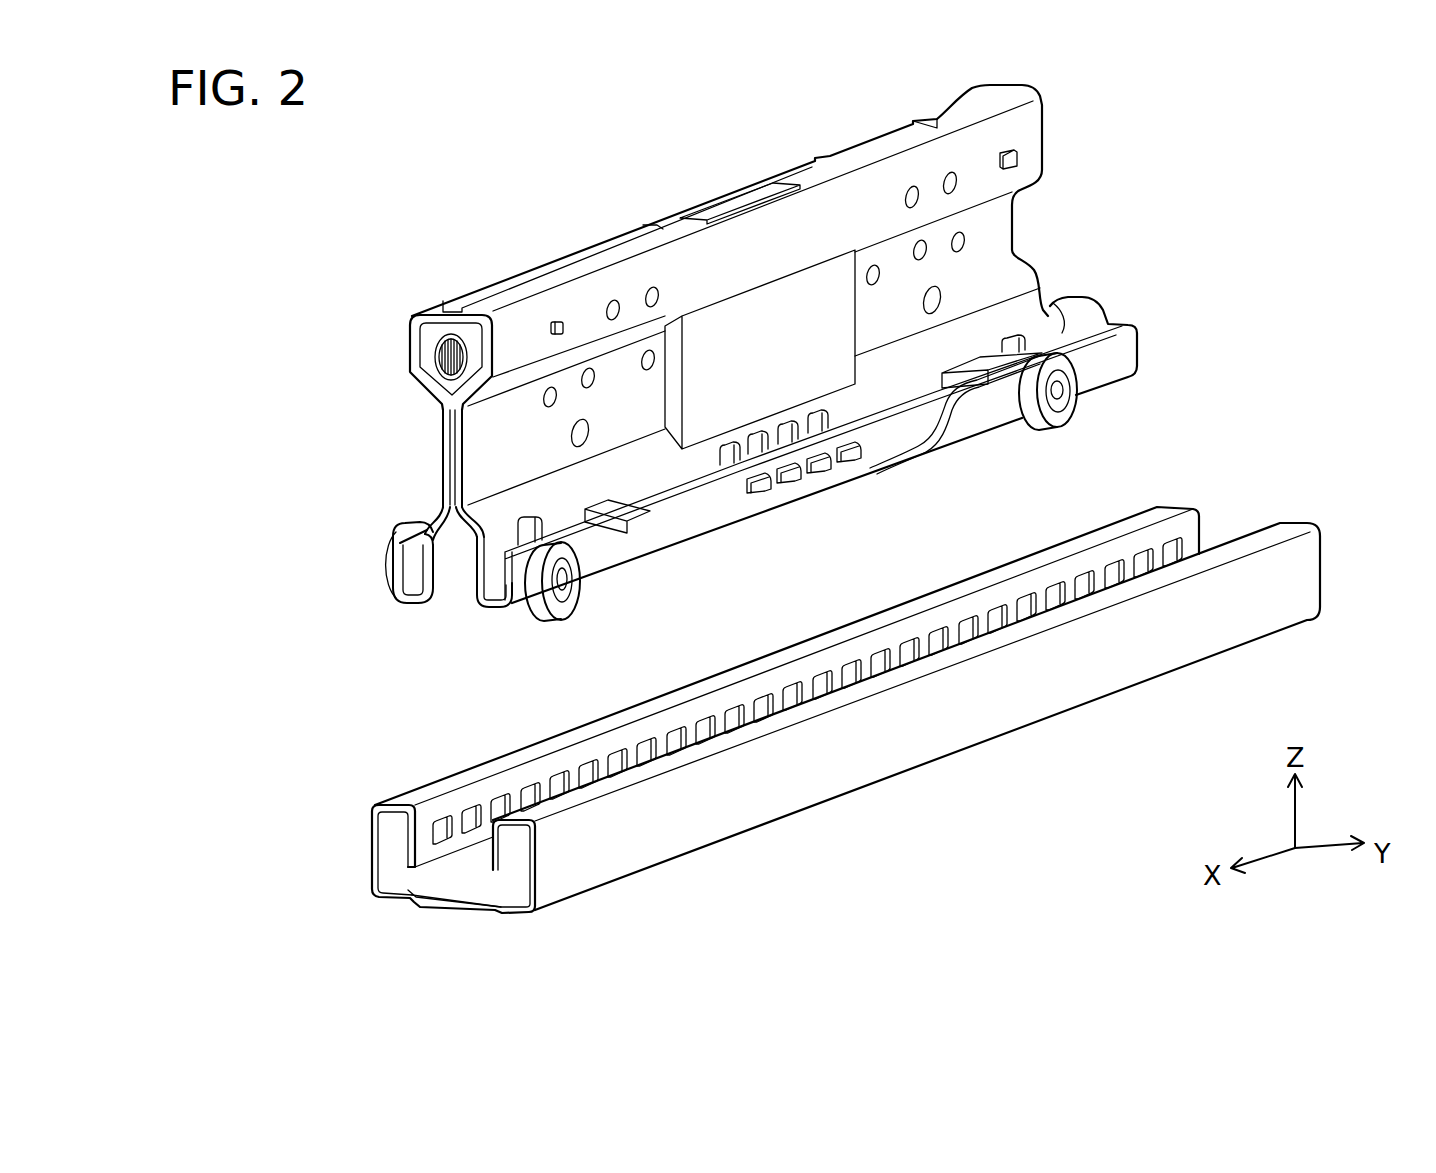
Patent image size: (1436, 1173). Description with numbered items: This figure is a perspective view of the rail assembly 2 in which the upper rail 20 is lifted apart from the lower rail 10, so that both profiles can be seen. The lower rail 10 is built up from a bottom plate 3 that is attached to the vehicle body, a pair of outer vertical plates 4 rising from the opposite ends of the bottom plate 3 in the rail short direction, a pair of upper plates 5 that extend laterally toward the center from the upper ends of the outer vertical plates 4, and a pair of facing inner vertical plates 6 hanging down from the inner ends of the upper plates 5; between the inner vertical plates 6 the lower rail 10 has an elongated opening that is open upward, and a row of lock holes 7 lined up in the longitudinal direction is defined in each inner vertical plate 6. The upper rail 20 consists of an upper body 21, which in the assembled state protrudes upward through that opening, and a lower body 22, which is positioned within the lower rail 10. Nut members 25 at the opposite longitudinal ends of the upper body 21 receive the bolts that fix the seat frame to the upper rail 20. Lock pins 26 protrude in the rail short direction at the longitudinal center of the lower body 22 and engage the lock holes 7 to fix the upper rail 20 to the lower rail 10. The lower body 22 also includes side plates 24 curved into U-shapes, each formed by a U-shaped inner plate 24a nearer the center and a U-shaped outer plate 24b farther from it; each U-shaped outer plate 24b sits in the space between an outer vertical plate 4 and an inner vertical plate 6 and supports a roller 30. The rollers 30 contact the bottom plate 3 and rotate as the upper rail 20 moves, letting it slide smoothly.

The slide device 2 is at (441, 183).
The bottom plate 3 is at (430, 905).
The outer vertical plates 4 is at (373, 849).
The upper plates 5 is at (396, 806).
The inner vertical plates 6 is at (422, 853).
The lock holes 7 is at (472, 815).
The lower rail 10 is at (1285, 528).
The upper rail 20 is at (1196, 178).
The upper body 21 is at (1073, 181).
The lower body 22 is at (1113, 282).
The side plates 24 is at (283, 515).
The U-shaped inner plate 24a is at (407, 557).
The U-shaped outer plate 24b is at (405, 567).
The nut members 25 is at (431, 340).
The lock pins 26 is at (857, 457).
The rollers 30 is at (413, 527).